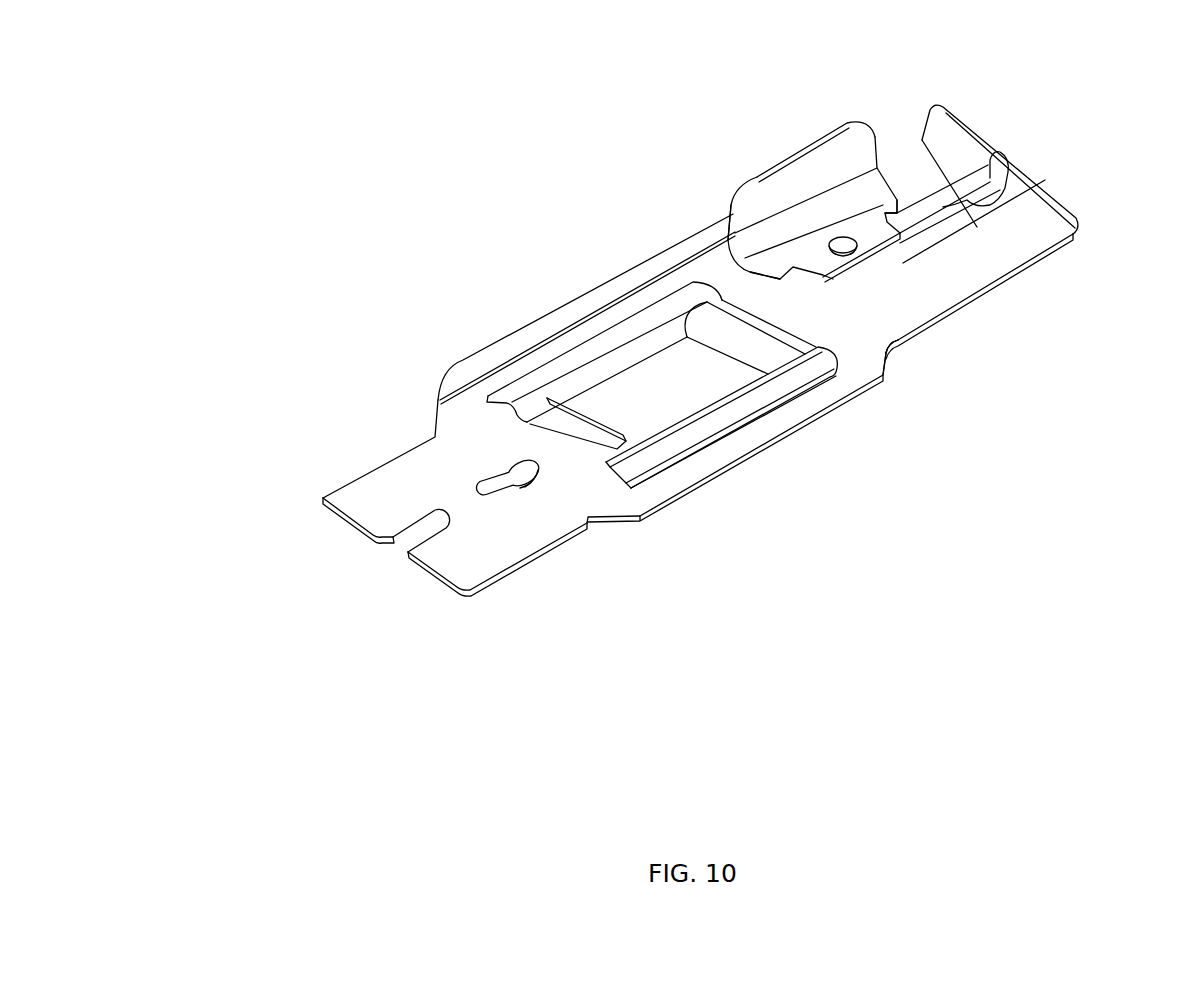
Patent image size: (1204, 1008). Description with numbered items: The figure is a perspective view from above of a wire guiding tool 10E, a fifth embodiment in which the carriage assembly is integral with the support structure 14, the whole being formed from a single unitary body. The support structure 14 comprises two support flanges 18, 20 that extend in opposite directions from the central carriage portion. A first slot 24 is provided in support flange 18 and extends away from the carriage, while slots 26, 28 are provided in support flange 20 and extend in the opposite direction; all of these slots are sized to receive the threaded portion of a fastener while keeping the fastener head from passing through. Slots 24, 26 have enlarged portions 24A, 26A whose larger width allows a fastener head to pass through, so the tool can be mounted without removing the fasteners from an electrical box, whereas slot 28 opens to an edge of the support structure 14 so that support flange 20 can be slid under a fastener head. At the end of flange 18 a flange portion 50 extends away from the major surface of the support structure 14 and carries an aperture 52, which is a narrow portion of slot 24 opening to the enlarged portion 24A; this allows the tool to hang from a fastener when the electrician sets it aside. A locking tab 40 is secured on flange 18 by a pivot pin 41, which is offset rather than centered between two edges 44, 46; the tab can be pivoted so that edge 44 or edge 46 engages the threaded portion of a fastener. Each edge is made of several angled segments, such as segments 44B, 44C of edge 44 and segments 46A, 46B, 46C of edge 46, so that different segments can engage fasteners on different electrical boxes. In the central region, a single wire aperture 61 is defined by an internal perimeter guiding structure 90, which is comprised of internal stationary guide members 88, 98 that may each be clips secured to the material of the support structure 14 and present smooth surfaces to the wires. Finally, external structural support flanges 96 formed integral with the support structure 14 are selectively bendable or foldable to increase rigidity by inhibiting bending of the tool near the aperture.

The wire guiding tool 10E is at (927, 564).
The support structure 14 is at (463, 623).
The support flange 18 is at (985, 262).
The support flange 20 is at (333, 490).
The first slot 24 is at (903, 263).
The enlarged portion 24A is at (977, 227).
The slot 26 is at (483, 478).
The enlarged portion 26A is at (533, 480).
The slot 28 is at (410, 520).
The locking tab 40 is at (822, 137).
The pivot pin 41 is at (833, 237).
The edge 44 is at (905, 208).
The edge segment 44B is at (950, 233).
The edge segment 44C is at (895, 200).
The edge 46 is at (888, 352).
The edge segment 46A is at (893, 335).
The edge segment 46B is at (743, 200).
The edge segment 46C is at (757, 258).
The flange portion 50 is at (1077, 193).
The aperture 52 is at (1000, 163).
The first aperture 61 is at (673, 395).
The internal stationary guide member 88 is at (600, 340).
The internal perimeter guiding structure 90 is at (577, 380).
The external structural support flange 96 is at (513, 327).
The internal stationary guide member 98 is at (743, 328).